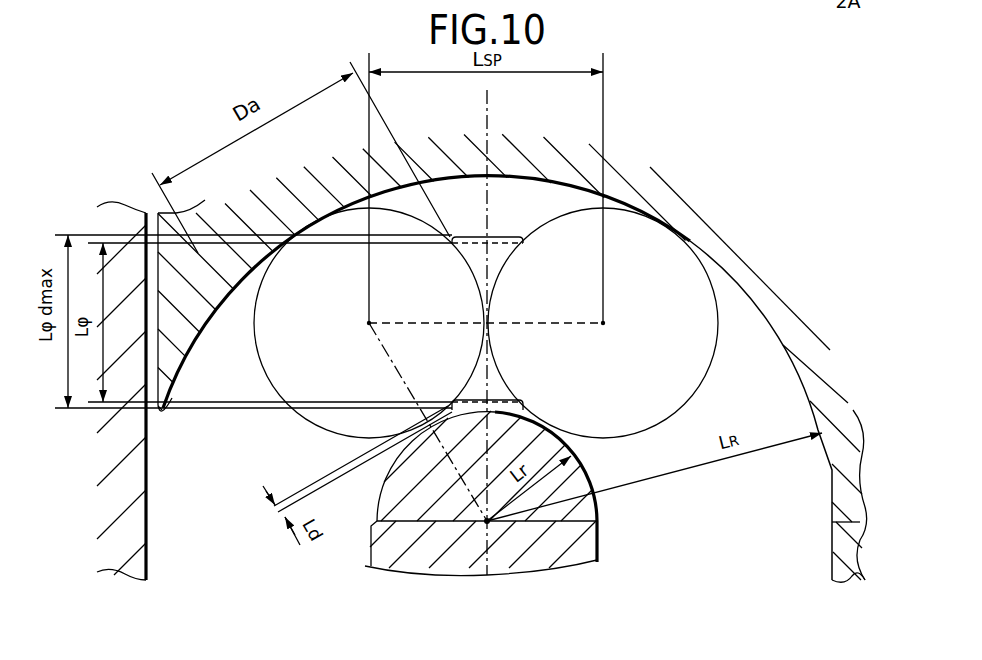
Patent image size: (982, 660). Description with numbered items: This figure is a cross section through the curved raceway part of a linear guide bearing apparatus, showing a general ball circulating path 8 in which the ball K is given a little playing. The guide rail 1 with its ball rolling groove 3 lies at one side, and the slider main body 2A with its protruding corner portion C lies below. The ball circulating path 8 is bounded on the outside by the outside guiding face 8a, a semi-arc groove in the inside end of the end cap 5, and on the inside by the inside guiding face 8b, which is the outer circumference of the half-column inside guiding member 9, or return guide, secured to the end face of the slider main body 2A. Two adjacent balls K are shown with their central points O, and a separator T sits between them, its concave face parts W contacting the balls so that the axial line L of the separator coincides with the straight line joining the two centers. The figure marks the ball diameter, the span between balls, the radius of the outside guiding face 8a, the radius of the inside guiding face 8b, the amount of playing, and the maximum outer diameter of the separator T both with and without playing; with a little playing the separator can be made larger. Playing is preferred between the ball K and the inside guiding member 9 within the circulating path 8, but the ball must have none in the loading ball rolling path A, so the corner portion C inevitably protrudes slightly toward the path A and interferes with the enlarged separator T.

The guide rail 1 is at (112, 452).
The ball rolling groove 3 is at (150, 513).
The end cap 5 is at (770, 284).
The ball circulating path 8 is at (213, 476).
The outside guiding face 8a is at (832, 472).
The inside guiding face 8b is at (588, 468).
The inside guiding member 9 is at (420, 500).
The slider main body 2A is at (530, 563).
The loading ball rolling path A is at (230, 584).
The central point O is at (486, 323).
The ball K is at (672, 238).
The concave face part W is at (466, 268).
The separator T is at (478, 246).
The axial line L is at (554, 326).
The corner portion C is at (370, 523).